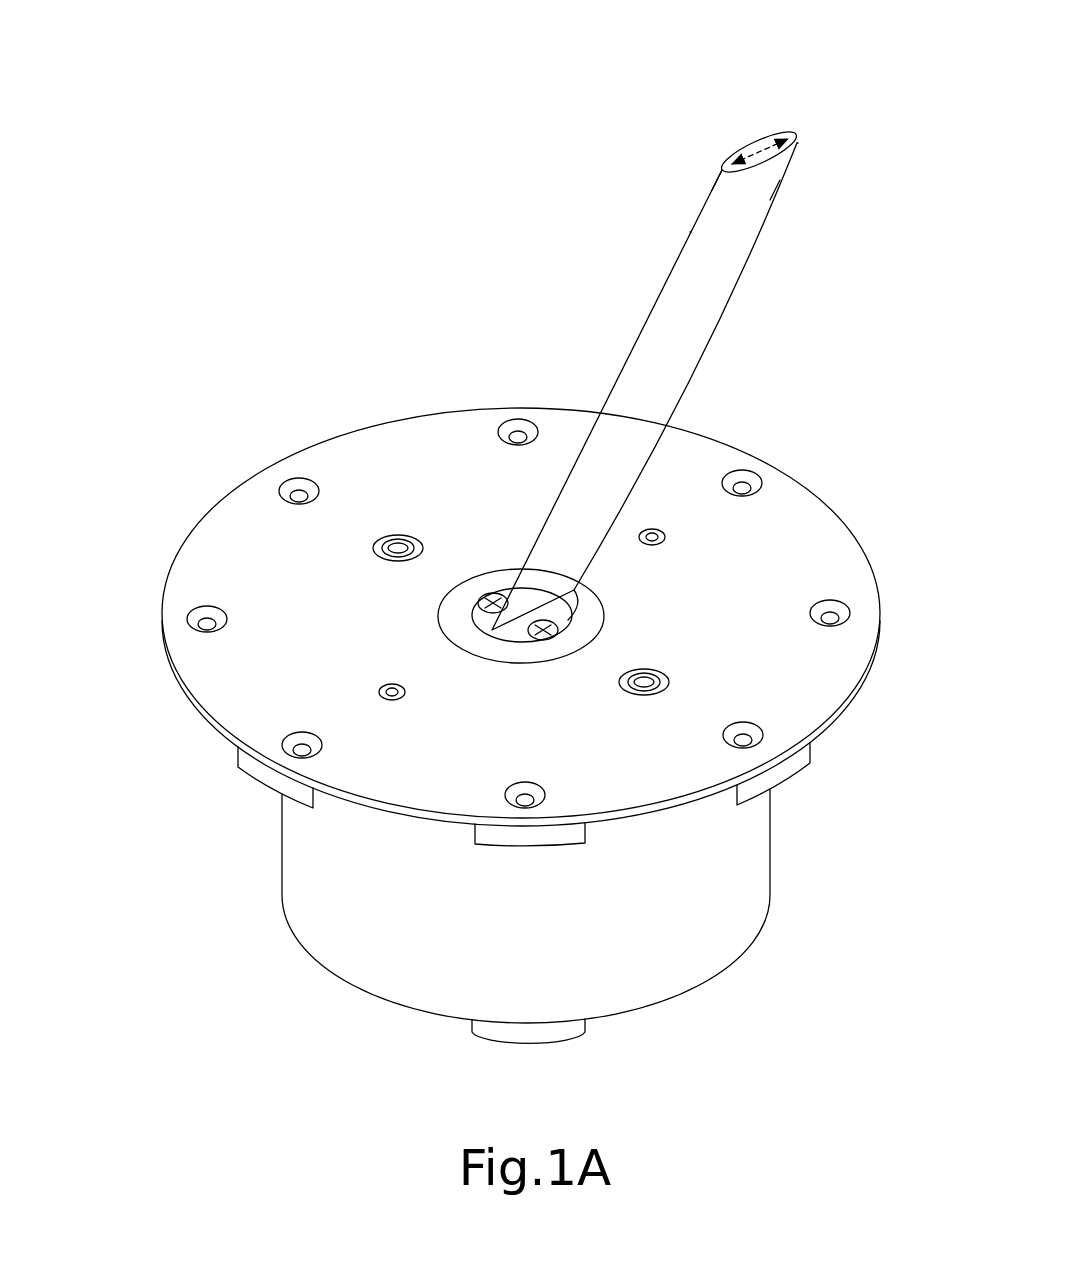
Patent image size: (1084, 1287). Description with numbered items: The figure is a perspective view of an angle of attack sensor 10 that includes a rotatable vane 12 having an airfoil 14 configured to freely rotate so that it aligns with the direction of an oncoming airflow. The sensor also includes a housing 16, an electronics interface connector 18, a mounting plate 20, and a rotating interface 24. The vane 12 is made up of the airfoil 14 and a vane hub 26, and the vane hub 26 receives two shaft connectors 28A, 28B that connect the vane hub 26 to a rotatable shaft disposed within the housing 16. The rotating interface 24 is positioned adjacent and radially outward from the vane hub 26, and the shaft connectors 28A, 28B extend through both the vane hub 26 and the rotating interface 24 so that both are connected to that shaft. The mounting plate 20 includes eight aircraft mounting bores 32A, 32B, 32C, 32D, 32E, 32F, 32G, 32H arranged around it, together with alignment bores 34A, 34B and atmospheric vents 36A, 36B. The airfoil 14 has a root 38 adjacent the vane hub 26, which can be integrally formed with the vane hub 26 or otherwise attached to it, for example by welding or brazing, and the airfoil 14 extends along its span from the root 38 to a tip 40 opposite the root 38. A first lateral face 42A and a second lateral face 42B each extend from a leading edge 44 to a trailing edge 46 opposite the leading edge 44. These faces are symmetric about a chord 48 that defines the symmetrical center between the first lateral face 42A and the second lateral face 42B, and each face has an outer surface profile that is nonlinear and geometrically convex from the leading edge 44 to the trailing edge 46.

The angle of attack sensor 10 is at (885, 338).
The rotatable vane 12 is at (685, 336).
The airfoil 14 is at (748, 271).
The housing 16 is at (770, 848).
The electronics interface connector 18 is at (560, 1040).
The mounting plate 20 is at (812, 525).
The rotating interface 24 is at (558, 598).
The vane hub 26 is at (480, 622).
The shaft connector 28A is at (492, 594).
The shaft connector 28B is at (545, 641).
The aircraft mounting bore 32A is at (765, 731).
The aircraft mounting bore 32B is at (545, 796).
The aircraft mounting bore 32C is at (282, 742).
The aircraft mounting bore 32D is at (190, 616).
The aircraft mounting bore 32E is at (288, 480).
The aircraft mounting bore 32F is at (518, 418).
The aircraft mounting bore 32G is at (742, 470).
The aircraft mounting bore 32H is at (850, 610).
The alignment bore 34A is at (378, 693).
The alignment bore 34B is at (656, 529).
The atmospheric vent 36A is at (670, 682).
The atmospheric vent 36B is at (373, 548).
The root 38 is at (574, 612).
The tip 40 is at (782, 131).
The first lateral face 42A is at (755, 191).
The second lateral face 42B is at (712, 171).
The leading edge 44 is at (689, 232).
The trailing edge 46 is at (797, 146).
The chord 48 is at (752, 150).